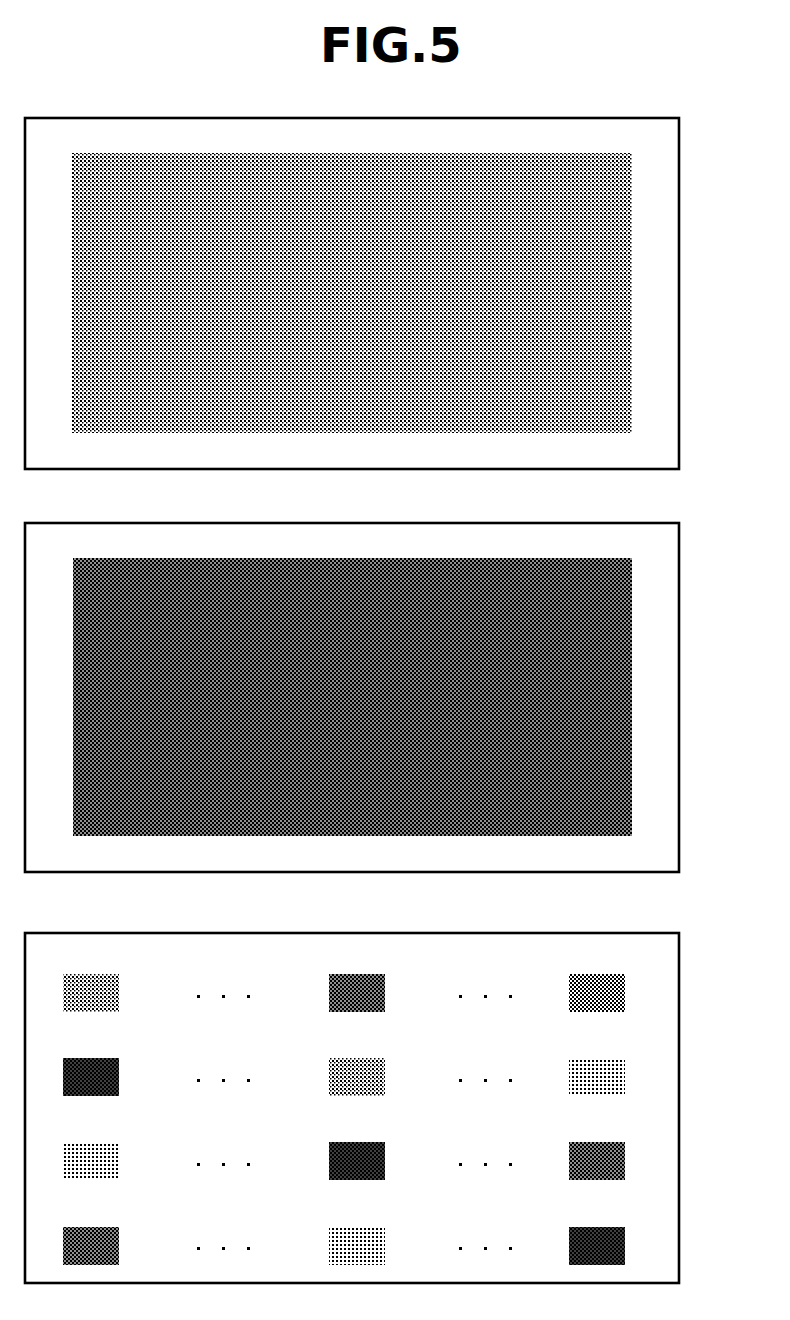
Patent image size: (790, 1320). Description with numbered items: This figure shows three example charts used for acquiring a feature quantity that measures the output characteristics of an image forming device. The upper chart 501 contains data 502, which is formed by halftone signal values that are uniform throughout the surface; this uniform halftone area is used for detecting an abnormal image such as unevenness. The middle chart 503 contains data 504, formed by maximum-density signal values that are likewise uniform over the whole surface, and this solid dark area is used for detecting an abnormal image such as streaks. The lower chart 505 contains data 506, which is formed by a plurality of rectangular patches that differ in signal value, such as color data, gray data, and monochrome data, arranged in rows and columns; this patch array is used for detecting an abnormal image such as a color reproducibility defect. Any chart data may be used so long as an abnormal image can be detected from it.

The chart 501 is at (679, 288).
The data 502 is at (632, 187).
The chart 503 is at (679, 715).
The data 504 is at (632, 614).
The chart 505 is at (679, 1113).
The data 506 is at (625, 990).